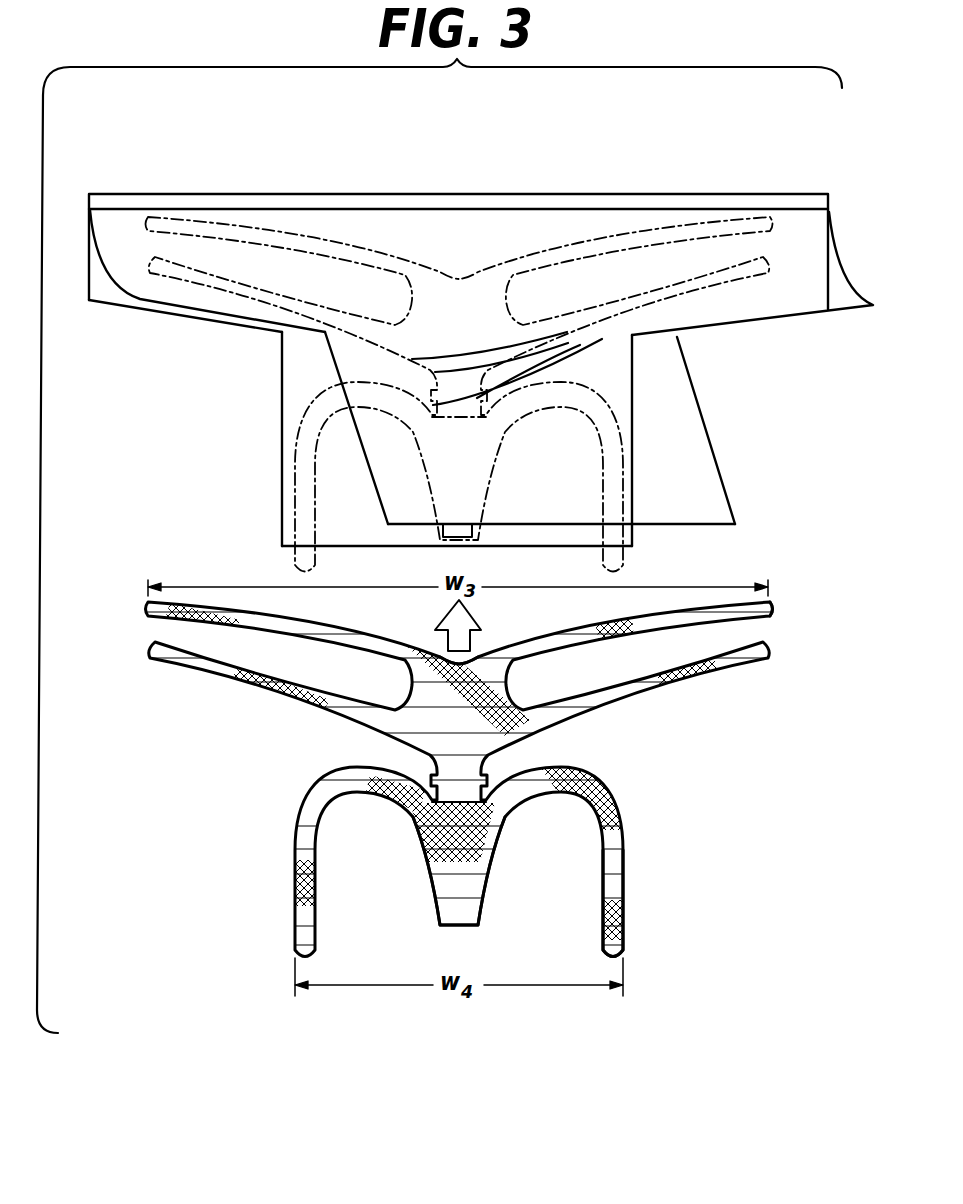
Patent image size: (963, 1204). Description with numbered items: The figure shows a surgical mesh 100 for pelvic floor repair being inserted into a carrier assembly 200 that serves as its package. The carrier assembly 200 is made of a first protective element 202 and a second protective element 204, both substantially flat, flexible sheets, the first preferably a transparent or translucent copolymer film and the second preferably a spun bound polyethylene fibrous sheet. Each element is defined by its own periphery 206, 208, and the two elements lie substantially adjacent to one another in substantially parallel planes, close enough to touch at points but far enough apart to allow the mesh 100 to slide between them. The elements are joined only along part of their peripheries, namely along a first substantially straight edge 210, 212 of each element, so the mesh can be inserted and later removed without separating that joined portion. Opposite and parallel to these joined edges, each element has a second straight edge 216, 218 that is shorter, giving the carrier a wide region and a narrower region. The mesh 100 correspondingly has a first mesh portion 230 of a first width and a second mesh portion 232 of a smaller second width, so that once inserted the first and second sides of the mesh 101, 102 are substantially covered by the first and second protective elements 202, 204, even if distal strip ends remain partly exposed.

The carrier assembly 200 is at (270, 163).
The first substantially straight edge of first protective element 210 is at (587, 194).
The first substantially straight edge of second protective element 212 is at (497, 194).
The first protective element 202 is at (710, 462).
The periphery of first protective element 206 is at (690, 387).
The second straight edge of second protective element 218 is at (410, 527).
The second protective element 204 is at (631, 548).
The second straight edge of first protective element 216 is at (292, 546).
The periphery of second protective element 208 is at (508, 547).
The mesh 100 is at (688, 738).
The first side of the mesh 101 is at (457, 746).
The second side of the mesh 102 is at (482, 857).
The first mesh portion 230 is at (792, 625).
The second mesh portion 232 is at (636, 890).